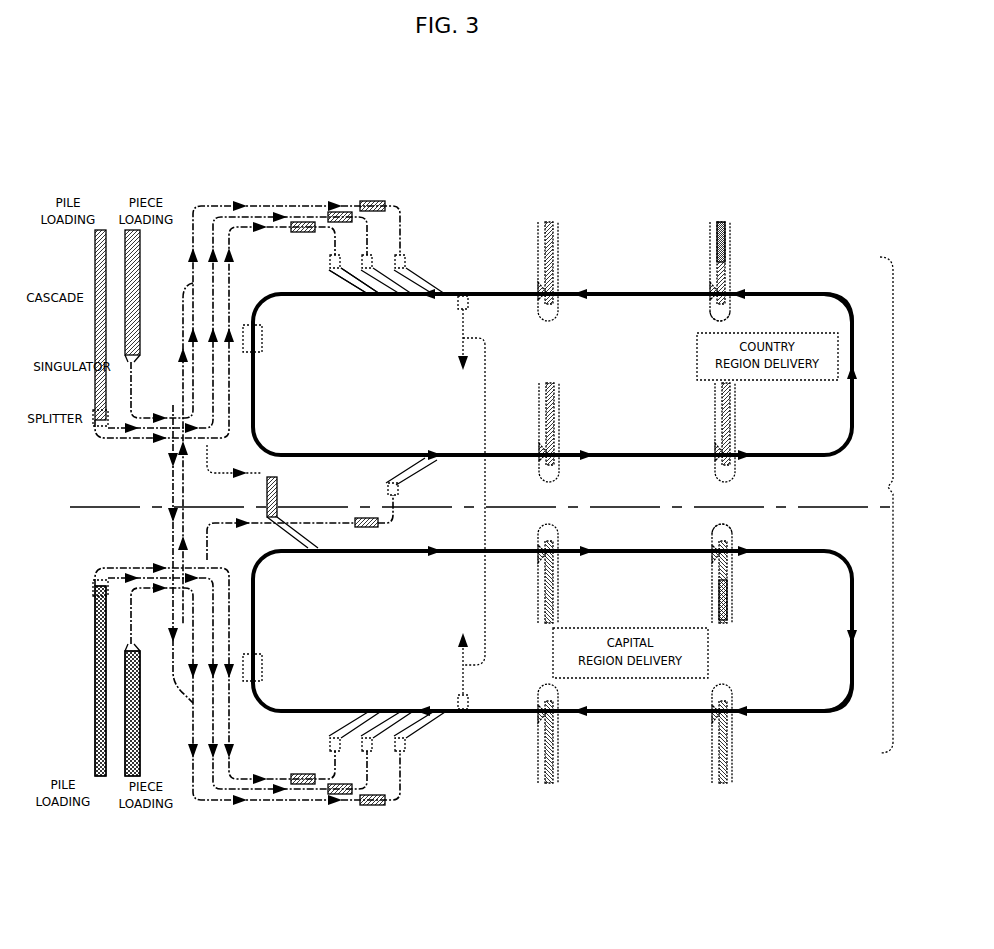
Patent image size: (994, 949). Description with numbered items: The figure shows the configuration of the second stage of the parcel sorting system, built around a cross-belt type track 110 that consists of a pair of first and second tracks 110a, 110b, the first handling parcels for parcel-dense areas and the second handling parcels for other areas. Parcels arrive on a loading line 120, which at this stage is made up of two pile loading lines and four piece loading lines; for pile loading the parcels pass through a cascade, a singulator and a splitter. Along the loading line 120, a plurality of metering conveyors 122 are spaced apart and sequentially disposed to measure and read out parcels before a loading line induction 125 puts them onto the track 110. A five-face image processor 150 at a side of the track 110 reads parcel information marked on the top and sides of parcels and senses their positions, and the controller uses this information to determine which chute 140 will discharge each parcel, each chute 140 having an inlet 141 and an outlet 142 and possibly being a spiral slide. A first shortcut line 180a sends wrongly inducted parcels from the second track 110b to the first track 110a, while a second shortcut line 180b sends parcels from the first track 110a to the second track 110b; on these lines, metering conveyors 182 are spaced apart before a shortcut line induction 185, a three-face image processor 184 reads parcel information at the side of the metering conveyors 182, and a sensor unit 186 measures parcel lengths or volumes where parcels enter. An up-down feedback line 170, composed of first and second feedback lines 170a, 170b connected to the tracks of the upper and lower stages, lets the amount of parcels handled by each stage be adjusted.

The track 110 is at (908, 505).
The first track 110a is at (820, 712).
The second track 110b is at (821, 294).
The loading line 120 is at (125, 704).
The metering conveyor 122 is at (372, 202).
The loading line induction 125 is at (338, 296).
The chute 140 is at (746, 248).
The inlet 141 is at (705, 322).
The outlet 142 is at (702, 248).
The 5-face image processor 150 is at (262, 340).
The up-down feedback line 170 is at (489, 482).
The first feedback line 170a is at (463, 668).
The second feedback line 170b is at (463, 338).
The first shortcut line 180a is at (195, 525).
The second shortcut line 180b is at (285, 488).
The metering conveyor 182 is at (362, 530).
The 3-face image processor 184 is at (393, 512).
The shortcut line induction 185 is at (287, 555).
The sensor unit 186 is at (365, 517).